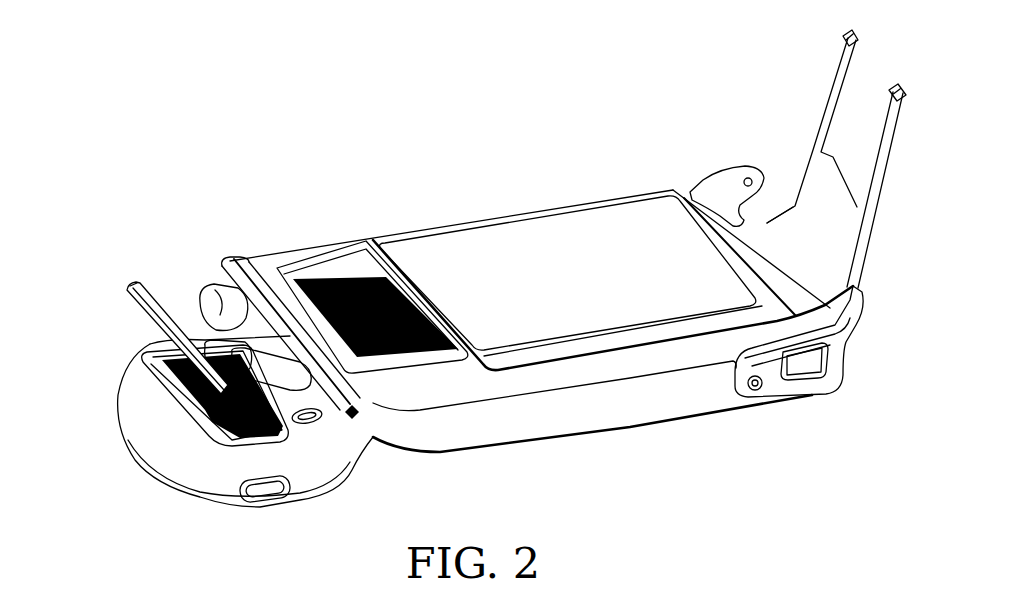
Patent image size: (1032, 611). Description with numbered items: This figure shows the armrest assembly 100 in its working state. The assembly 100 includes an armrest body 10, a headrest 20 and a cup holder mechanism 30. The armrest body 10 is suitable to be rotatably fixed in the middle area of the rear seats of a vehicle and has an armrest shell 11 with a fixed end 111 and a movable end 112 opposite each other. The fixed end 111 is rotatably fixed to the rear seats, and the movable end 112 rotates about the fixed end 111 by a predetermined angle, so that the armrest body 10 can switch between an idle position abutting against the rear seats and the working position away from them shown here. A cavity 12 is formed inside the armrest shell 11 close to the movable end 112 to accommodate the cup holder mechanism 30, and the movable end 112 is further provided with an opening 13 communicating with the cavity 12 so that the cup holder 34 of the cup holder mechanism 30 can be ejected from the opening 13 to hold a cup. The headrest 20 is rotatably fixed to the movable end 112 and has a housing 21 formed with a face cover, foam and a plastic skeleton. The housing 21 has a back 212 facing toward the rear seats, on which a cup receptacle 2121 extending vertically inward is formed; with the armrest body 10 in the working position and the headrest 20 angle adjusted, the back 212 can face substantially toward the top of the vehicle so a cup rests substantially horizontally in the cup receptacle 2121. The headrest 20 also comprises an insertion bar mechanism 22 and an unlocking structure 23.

The armrest assembly 100 is at (411, 93).
The armrest body 10 is at (550, 250).
The armrest shell 11 is at (420, 367).
The fixed end 111 is at (762, 252).
The movable end 112 is at (296, 312).
The cavity 12 is at (219, 279).
The opening 13 is at (230, 288).
The headrest 20 is at (137, 413).
The housing 21 is at (177, 443).
The back 212 is at (163, 397).
The cup receptacle 2121 is at (183, 407).
The insertion bar mechanism 22 is at (356, 416).
The unlocking structure 23 is at (292, 490).
The cup holder mechanism 30 is at (147, 324).
The cup holder 34 is at (138, 311).